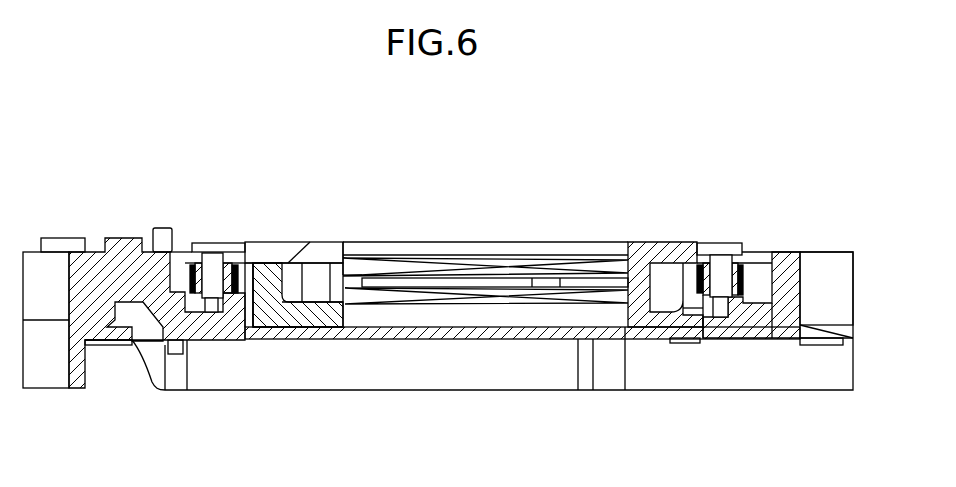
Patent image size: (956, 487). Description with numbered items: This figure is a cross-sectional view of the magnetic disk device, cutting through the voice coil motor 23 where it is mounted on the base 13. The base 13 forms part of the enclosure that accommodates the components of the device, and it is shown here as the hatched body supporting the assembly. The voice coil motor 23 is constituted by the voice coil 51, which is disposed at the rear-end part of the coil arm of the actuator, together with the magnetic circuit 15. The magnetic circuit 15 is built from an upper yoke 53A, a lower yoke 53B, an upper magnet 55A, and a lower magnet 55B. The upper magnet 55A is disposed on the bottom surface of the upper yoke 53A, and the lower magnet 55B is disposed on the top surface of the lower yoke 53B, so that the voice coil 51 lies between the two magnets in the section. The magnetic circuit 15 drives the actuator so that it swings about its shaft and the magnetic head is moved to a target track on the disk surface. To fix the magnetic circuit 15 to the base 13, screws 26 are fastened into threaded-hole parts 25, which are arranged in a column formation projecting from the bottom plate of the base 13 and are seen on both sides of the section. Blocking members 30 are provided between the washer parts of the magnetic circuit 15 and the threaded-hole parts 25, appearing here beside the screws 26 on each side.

The base 13 is at (128, 250).
The magnetic circuit 15 is at (434, 172).
The voice coil motor 23 is at (352, 296).
The threaded-hole parts 25 is at (226, 318).
The screws 26 is at (213, 262).
The blocking members 30 is at (236, 279).
The voice coil 51 is at (522, 283).
The upper yoke 53A is at (647, 242).
The lower yoke 53B is at (641, 313).
The upper magnet 55A is at (370, 258).
The lower magnet 55B is at (524, 300).